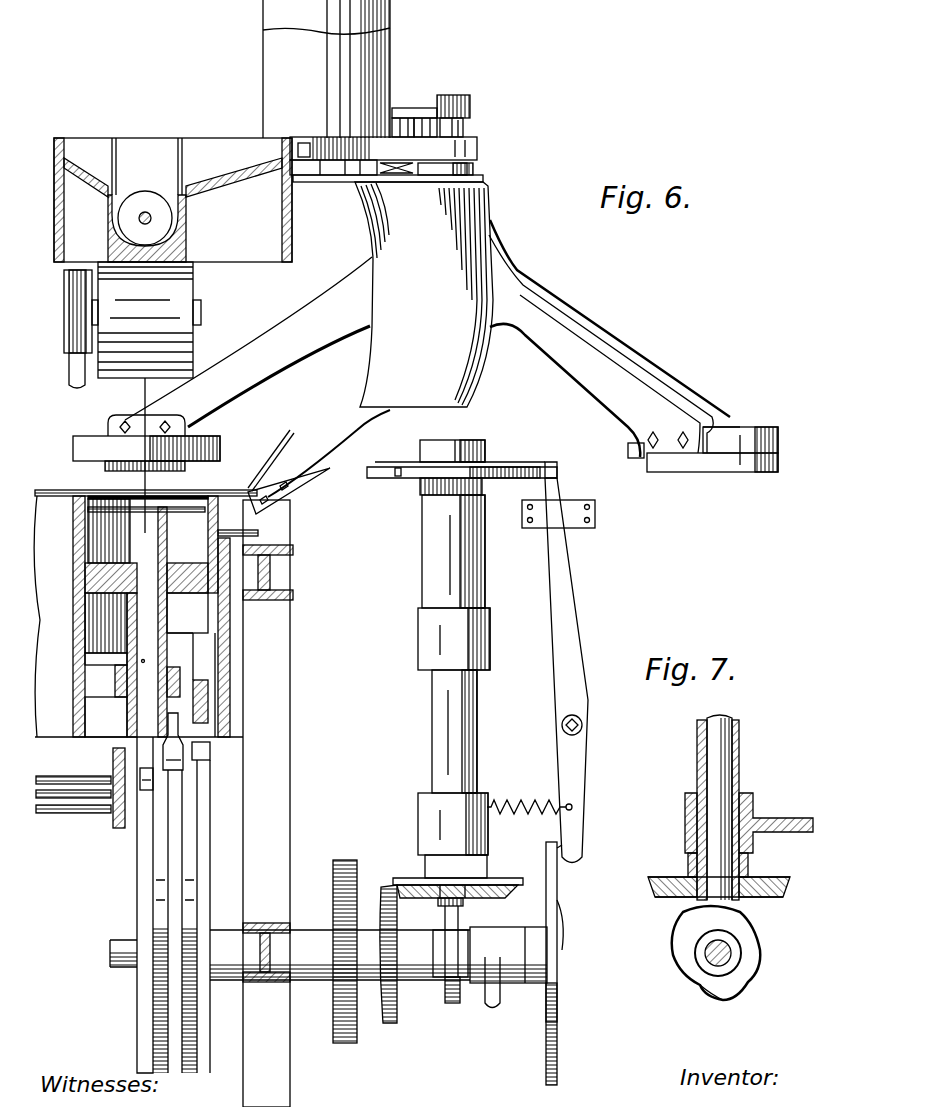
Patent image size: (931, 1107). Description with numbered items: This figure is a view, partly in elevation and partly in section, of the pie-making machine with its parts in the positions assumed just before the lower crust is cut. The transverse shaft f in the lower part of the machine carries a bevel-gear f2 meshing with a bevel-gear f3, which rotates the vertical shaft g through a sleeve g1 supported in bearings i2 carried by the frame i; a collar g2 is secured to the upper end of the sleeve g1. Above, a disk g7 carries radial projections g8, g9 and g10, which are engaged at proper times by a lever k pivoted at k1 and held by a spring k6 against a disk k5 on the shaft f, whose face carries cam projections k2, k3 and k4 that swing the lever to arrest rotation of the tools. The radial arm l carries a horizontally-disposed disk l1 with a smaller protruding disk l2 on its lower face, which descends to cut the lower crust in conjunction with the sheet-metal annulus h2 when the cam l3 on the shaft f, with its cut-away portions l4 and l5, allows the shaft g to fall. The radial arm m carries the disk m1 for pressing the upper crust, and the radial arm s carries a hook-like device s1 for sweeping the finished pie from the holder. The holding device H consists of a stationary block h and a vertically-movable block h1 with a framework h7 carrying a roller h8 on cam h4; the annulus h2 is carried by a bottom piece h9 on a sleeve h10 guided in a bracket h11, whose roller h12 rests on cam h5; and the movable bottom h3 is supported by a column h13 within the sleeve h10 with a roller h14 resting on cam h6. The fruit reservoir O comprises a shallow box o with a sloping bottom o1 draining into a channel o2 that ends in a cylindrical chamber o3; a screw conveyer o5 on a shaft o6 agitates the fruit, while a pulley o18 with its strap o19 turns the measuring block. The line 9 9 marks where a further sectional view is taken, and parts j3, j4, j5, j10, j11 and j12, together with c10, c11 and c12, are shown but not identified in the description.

In FIG. 6, the feed pipe j5 is at (290, 62).
In FIG. 6, the collar j10 is at (400, 108).
In FIG. 6, the collar j11 is at (425, 108).
In FIG. 6, the nut j12 is at (462, 102).
In FIG. 6, the vertical shaft g is at (470, 126).
In FIG. 7, the vertical shaft g is at (718, 752).
In FIG. 6, the fruit reservoir and feeding device O is at (173, 181).
In FIG. 6, the shallow box o is at (90, 146).
In FIG. 6, the sloping bottom o1 is at (220, 182).
In FIG. 6, the channel o2 is at (147, 211).
In FIG. 6, the screw conveyer or agitator o5 is at (163, 221).
In FIG. 6, the shaft o6 is at (139, 219).
In FIG. 6, the cylindrical chamber o3 is at (165, 345).
In FIG. 6, the pulley o18 is at (72, 320).
In FIG. 6, the strap o19 is at (76, 372).
In FIG. 6, the yoke j3 is at (424, 294).
In FIG. 6, the radial arm m is at (672, 392).
In FIG. 6, the radial arm s is at (562, 370).
In FIG. 6, the hook-like device s1 is at (728, 480).
In FIG. 6, the disk m1 is at (632, 445).
In FIG. 6, the radial arm l is at (283, 365).
In FIG. 6, the bar j4 is at (320, 432).
In FIG. 6, the section line 9 is at (145, 420).
In FIG. 6, the horizontally-disposed disk l1 is at (220, 456).
In FIG. 6, the protruding smaller disk l2 is at (186, 470).
In FIG. 6, the disk g7 is at (492, 478).
In FIG. 6, the radial projection g8 is at (560, 475).
In FIG. 6, the radial projection g9 is at (440, 488).
In FIG. 6, the radial projection g10 is at (404, 478).
In FIG. 6, the collar g2 is at (432, 568).
In FIG. 6, the bearings i2 is at (428, 644).
In FIG. 7, the bearings i2 is at (756, 806).
In FIG. 6, the sleeve g1 is at (435, 740).
In FIG. 7, the sleeve g1 is at (698, 766).
In FIG. 6, the lever k is at (577, 592).
In FIG. 6, the pivot k1 is at (584, 725).
In FIG. 6, the spring k6 is at (520, 803).
In FIG. 6, the cam projection k2 is at (568, 858).
In FIG. 6, the disk k5 is at (560, 882).
In FIG. 6, the cam projection k3 is at (565, 937).
In FIG. 6, the cam projection k4 is at (565, 1045).
In FIG. 6, the bevel-gear f3 is at (412, 886).
In FIG. 7, the bevel-gear f3 is at (662, 898).
In FIG. 6, the bevel-gear f2 is at (420, 1012).
In FIG. 6, the cam l3 is at (490, 1010).
In FIG. 7, the cam l3 is at (680, 950).
In FIG. 6, the shaft f is at (122, 970).
In FIG. 7, the shaft f is at (726, 962).
In FIG. 6, the holding device H is at (146, 613).
In FIG. 6, the vertically-movable bottom h3 is at (112, 504).
In FIG. 6, the sheet-metal annulus h2 is at (100, 545).
In FIG. 6, the bottom piece h9 is at (100, 580).
In FIG. 6, the stationary block h is at (95, 627).
In FIG. 6, the column h13 is at (143, 661).
In FIG. 6, the sleeve h10 is at (122, 680).
In FIG. 6, the bracket h11 is at (122, 700).
In FIG. 6, the vertically-movable block h1 is at (195, 612).
In FIG. 6, the framework h7 is at (200, 658).
In FIG. 6, the frame i is at (272, 580).
In FIG. 6, the cam h6 is at (147, 863).
In FIG. 6, the cam h5 is at (175, 887).
In FIG. 6, the cam h4 is at (200, 912).
In FIG. 6, the roller h8 is at (202, 762).
In FIG. 6, the roller h12 is at (178, 772).
In FIG. 6, the roller h14 is at (148, 792).
In FIG. 6, the plate c10 is at (68, 795).
In FIG. 6, the plate c11 is at (68, 798).
In FIG. 6, the bar c12 is at (118, 828).
In FIG. 7, the cut-away portion l4 is at (752, 942).
In FIG. 7, the cut-away portion l5 is at (698, 976).